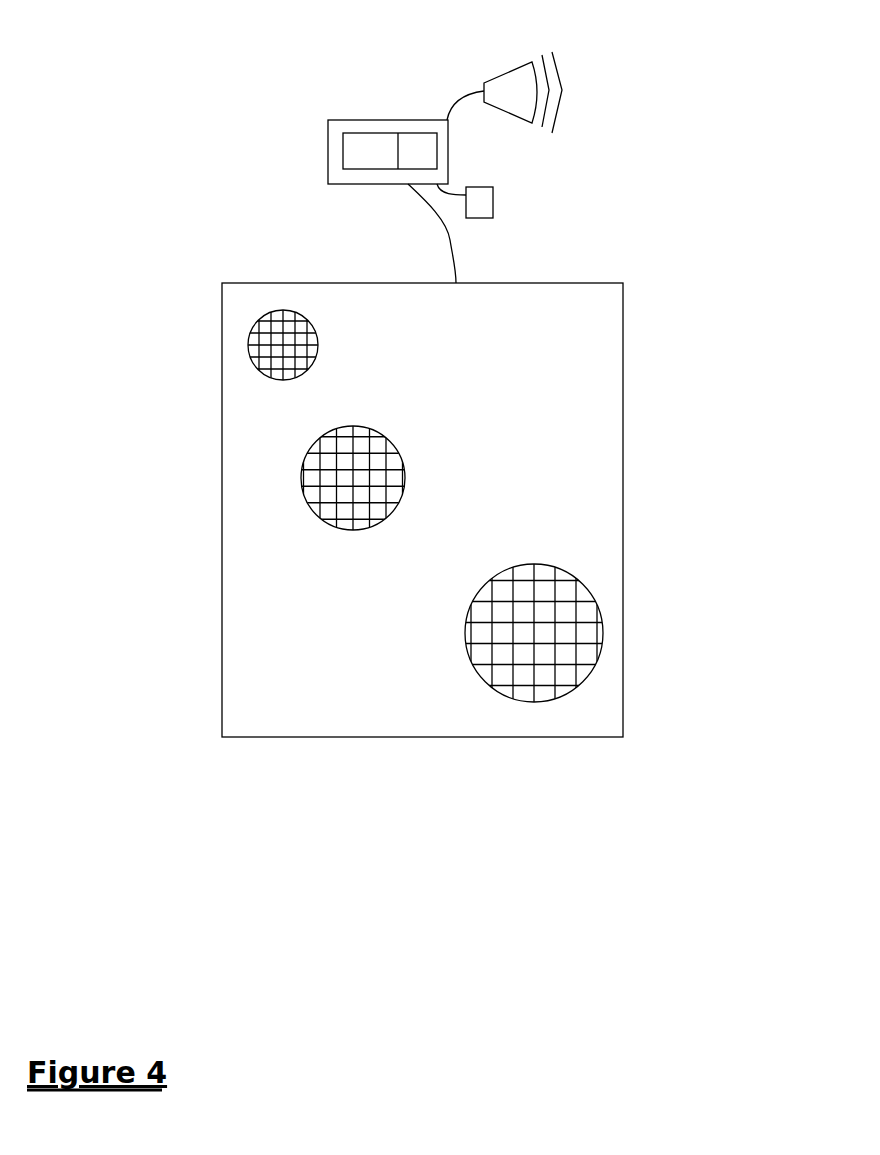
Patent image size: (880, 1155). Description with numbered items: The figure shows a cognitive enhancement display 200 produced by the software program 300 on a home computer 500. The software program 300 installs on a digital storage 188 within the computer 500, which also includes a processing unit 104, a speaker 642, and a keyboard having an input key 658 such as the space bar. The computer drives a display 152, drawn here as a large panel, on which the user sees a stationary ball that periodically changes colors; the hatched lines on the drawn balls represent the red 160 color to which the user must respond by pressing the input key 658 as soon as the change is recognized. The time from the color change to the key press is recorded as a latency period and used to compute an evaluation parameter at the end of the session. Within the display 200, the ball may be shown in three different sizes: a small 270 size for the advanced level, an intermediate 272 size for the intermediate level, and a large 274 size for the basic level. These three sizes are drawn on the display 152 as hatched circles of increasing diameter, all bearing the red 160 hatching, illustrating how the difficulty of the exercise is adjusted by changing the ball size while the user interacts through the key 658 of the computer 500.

The processing unit 104 is at (372, 178).
The digital storage 188 is at (352, 151).
The software program 300 is at (374, 124).
The speaker 642 is at (505, 90).
The input key 658 is at (477, 178).
The computer 500 is at (586, 139).
The display 152 is at (603, 370).
The display 200 is at (735, 455).
The small size 270 is at (243, 338).
The intermediate size 272 is at (295, 480).
The large size 274 is at (586, 633).
The red 160 is at (335, 345).